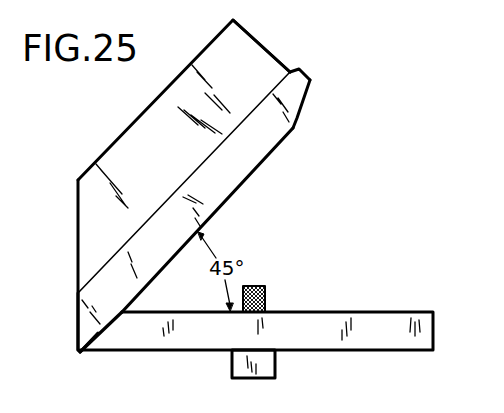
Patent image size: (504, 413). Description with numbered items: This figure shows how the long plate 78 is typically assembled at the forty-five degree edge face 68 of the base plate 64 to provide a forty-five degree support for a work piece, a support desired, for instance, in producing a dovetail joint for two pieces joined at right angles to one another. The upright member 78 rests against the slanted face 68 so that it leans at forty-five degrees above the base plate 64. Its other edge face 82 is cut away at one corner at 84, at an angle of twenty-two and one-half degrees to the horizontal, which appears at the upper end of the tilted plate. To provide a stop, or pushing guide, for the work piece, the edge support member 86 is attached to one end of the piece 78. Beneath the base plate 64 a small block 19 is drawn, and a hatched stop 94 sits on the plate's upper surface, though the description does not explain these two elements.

The upright member 78 is at (240, 178).
The edge support plate 86 is at (262, 44).
The edge face 82 is at (306, 73).
The cut-away corner 84 is at (301, 108).
The edge face 68 is at (98, 332).
The base plate 64 is at (350, 312).
The stop 94 is at (256, 286).
The support block 19 is at (275, 364).